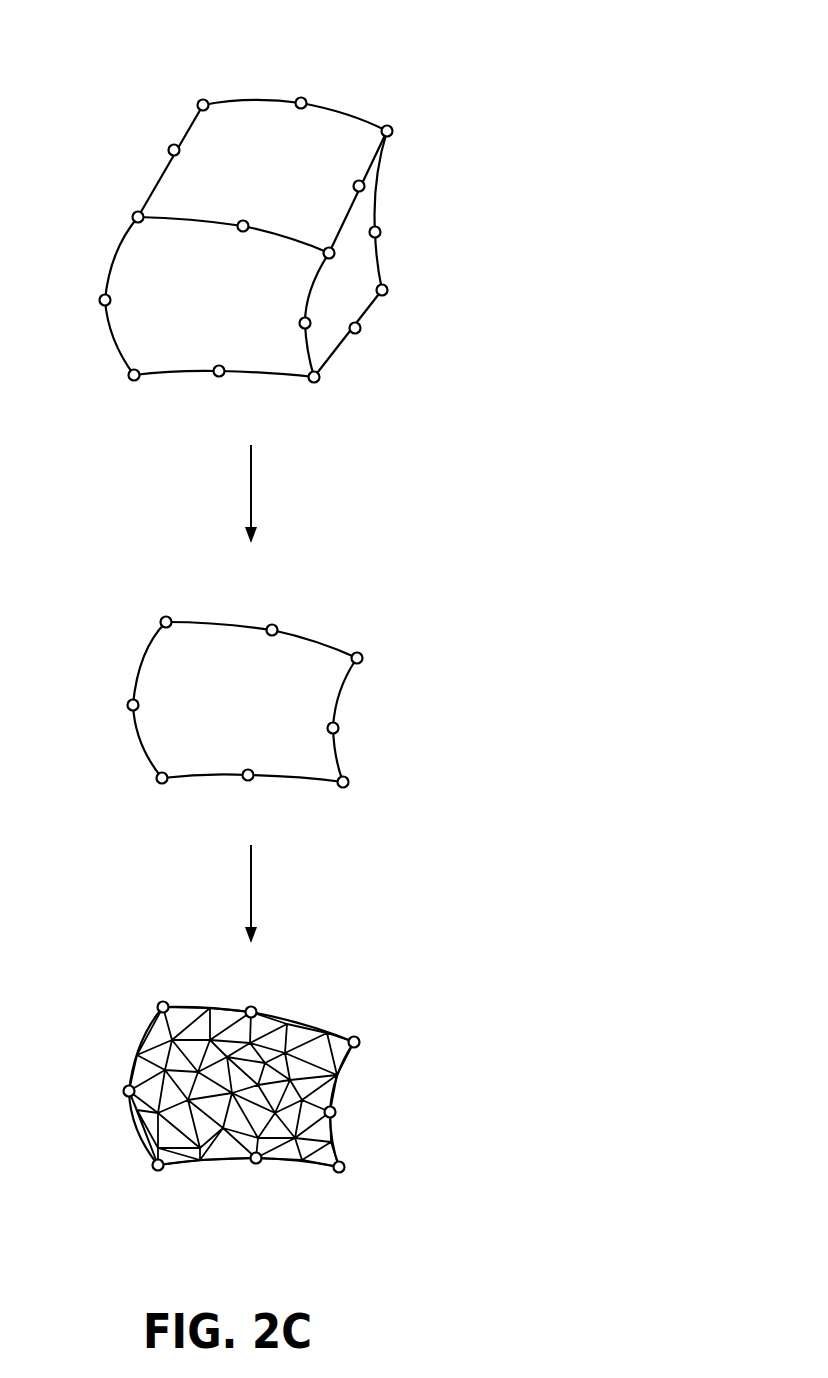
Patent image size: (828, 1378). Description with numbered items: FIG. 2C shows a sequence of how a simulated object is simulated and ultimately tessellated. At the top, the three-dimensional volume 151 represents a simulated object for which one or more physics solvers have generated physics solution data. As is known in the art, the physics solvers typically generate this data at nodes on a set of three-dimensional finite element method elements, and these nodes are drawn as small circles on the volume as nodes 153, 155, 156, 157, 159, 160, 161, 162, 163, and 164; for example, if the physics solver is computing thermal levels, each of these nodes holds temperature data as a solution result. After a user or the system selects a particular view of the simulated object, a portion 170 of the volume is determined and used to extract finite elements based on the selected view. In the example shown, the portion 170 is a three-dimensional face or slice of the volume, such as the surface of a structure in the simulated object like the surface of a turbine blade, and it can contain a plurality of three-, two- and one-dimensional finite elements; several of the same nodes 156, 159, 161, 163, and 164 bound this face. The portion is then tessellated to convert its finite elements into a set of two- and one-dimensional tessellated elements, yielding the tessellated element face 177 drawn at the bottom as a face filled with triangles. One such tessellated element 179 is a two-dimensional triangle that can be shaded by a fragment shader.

The 3D volume 151 is at (440, 31).
The node 153 is at (392, 127).
The node 155 is at (380, 229).
The node 156 is at (324, 256).
The node 157 is at (387, 287).
The node 159 is at (134, 213).
The node 160 is at (171, 146).
The node 161 is at (100, 297).
The node 162 is at (360, 325).
The node 163 is at (319, 380).
The node 164 is at (129, 379).
The portion of the 3D volume 170 is at (440, 571).
The tessellated 3D element 177 is at (440, 974).
The tessellated element 179 is at (335, 1130).